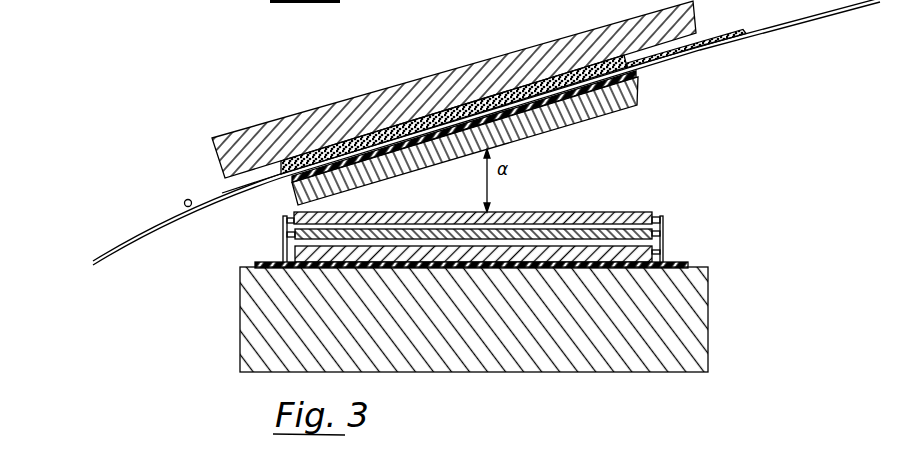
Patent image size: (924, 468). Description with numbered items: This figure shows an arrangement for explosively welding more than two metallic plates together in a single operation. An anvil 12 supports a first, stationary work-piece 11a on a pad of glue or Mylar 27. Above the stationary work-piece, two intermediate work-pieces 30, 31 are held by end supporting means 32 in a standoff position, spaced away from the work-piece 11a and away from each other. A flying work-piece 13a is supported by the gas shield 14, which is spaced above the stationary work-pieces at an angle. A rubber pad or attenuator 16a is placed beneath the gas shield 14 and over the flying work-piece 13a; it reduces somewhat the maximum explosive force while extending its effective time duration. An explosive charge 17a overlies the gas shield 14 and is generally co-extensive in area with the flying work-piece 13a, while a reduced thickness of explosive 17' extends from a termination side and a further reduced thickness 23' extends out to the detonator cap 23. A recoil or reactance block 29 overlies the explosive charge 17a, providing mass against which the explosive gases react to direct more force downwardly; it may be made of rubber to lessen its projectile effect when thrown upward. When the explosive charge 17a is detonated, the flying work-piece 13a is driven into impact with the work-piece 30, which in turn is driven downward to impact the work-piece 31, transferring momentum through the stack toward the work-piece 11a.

The recoil or reactance block 29 is at (275, 119).
The explosive charge 17a is at (443, 111).
The reduced thickness of explosive 17' is at (686, 35).
The flying work-piece 13a is at (614, 111).
The rubber pad or attenuator 16a is at (289, 185).
The gas shield 14 is at (123, 226).
The detonator cap 23 is at (173, 196).
The further reduced thickness of explosive 23' is at (232, 180).
The intermediate work-piece 30 is at (536, 211).
The intermediate work-piece 31 is at (590, 228).
The end supporting means 32 is at (283, 232).
The first work-piece 11a is at (664, 250).
The pad of glue or Mylar 27 is at (685, 262).
The anvil 12 is at (240, 321).